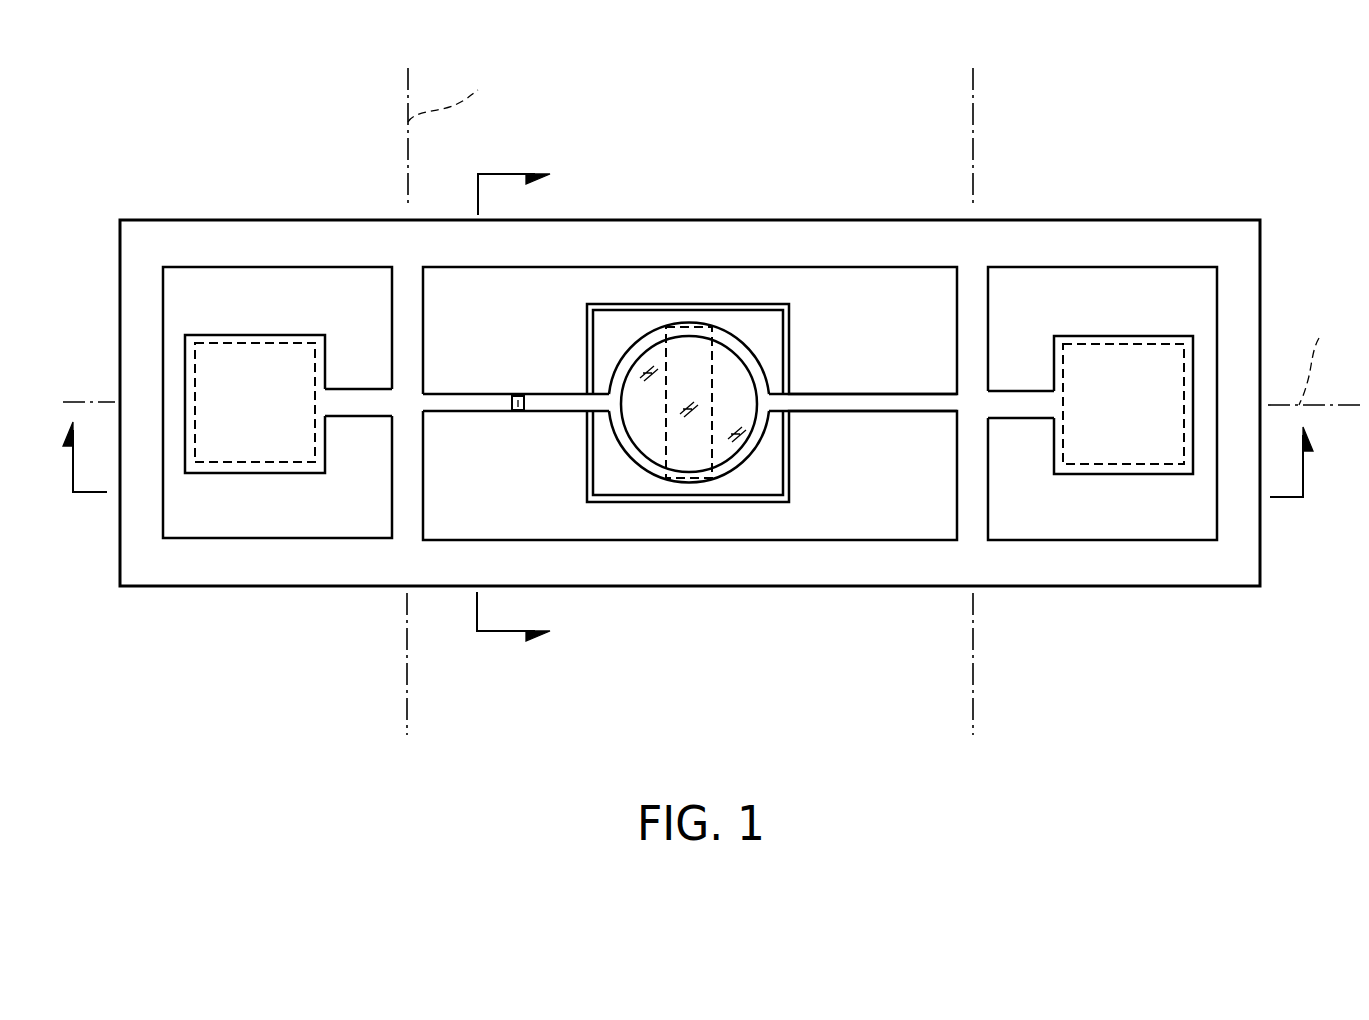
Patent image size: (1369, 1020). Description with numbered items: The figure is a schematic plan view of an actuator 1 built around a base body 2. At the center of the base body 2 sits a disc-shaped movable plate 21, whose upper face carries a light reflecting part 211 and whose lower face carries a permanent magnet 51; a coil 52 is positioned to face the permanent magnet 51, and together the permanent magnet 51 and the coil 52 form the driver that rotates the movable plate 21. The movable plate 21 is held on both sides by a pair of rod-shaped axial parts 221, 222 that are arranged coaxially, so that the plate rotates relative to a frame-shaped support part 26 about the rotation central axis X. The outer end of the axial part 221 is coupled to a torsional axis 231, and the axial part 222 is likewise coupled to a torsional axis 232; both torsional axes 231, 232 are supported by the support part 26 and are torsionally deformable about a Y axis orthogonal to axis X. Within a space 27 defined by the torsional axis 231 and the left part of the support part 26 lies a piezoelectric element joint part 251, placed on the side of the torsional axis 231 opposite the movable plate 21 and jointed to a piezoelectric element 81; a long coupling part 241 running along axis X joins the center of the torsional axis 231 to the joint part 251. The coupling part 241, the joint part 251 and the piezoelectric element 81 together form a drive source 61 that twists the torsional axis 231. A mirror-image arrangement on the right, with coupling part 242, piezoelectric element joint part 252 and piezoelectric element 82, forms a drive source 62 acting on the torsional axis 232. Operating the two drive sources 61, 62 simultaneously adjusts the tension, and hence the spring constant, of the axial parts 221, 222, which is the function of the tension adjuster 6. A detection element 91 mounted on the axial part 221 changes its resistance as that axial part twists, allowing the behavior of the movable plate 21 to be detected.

The actuator 1 is at (1195, 91).
The base body 2 is at (1210, 221).
The tension adjuster 6 is at (348, 320).
The movable plate 21 is at (641, 348).
The light reflecting part 211 is at (725, 363).
The axial part 221 is at (478, 400).
The axial part 222 is at (840, 405).
The torsional axis 231 is at (405, 490).
The torsional axis 232 is at (973, 483).
The coupling part 241 is at (350, 407).
The coupling part 242 is at (1023, 408).
The piezoelectric element joint part 251 is at (253, 438).
The piezoelectric element joint part 252 is at (1123, 447).
The support part 26 is at (733, 572).
The space 27 is at (228, 283).
The permanent magnet 51 is at (685, 483).
The coil 52 is at (590, 484).
The drive source 61 is at (267, 526).
The drive source 62 is at (1112, 527).
The piezoelectric element 81 is at (215, 438).
The piezoelectric element 82 is at (1158, 437).
The detection element 91 is at (518, 413).